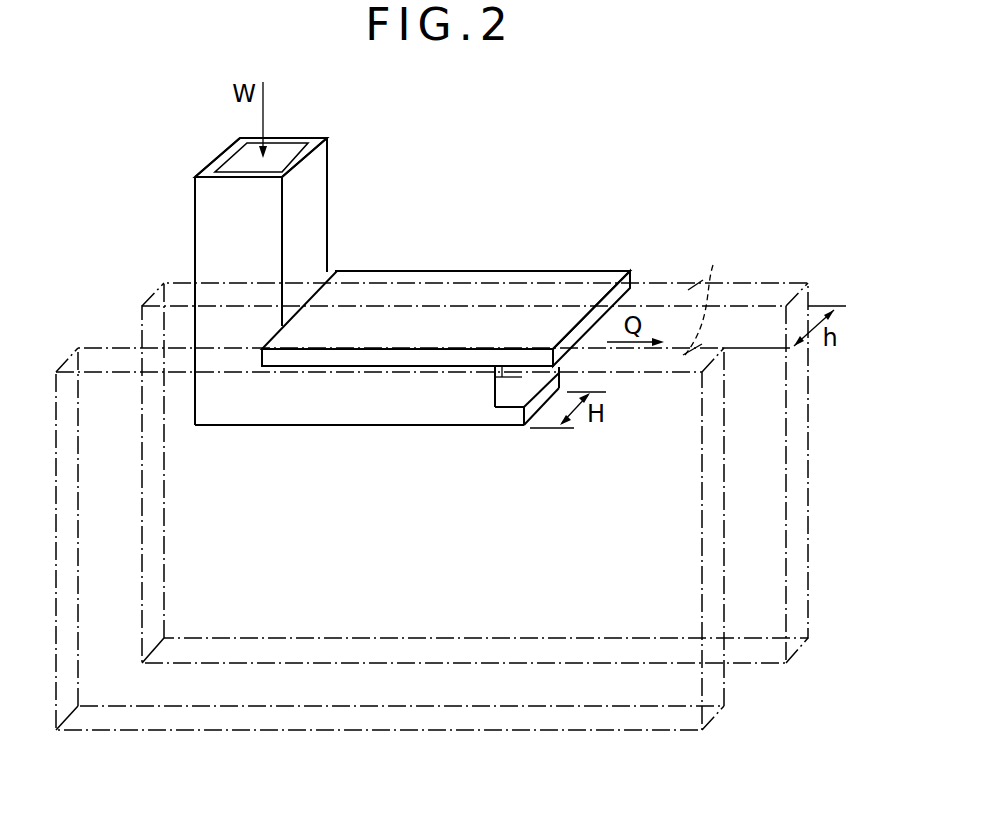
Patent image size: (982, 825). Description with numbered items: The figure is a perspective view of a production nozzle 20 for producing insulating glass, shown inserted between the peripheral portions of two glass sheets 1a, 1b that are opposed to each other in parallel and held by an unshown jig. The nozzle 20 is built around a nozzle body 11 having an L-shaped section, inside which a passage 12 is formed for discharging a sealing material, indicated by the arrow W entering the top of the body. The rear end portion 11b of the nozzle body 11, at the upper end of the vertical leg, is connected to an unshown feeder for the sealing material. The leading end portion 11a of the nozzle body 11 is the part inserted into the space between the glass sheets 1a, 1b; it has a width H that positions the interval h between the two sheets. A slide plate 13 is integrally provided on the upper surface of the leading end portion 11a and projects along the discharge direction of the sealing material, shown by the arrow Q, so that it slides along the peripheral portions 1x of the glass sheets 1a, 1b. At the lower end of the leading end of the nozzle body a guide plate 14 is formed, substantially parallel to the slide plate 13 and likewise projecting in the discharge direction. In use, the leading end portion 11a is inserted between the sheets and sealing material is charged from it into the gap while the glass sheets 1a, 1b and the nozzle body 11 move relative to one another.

The glass sheet 1a is at (773, 282).
The glass sheet 1b is at (668, 378).
The peripheral portions 1x is at (711, 296).
The nozzle body 11 is at (205, 232).
The leading end portion 11a is at (298, 415).
The rear end portion 11b is at (225, 150).
The passage 12 is at (285, 148).
The slide plate 13 is at (477, 273).
The guide plate 14 is at (497, 422).
The production nozzle 20 is at (355, 253).